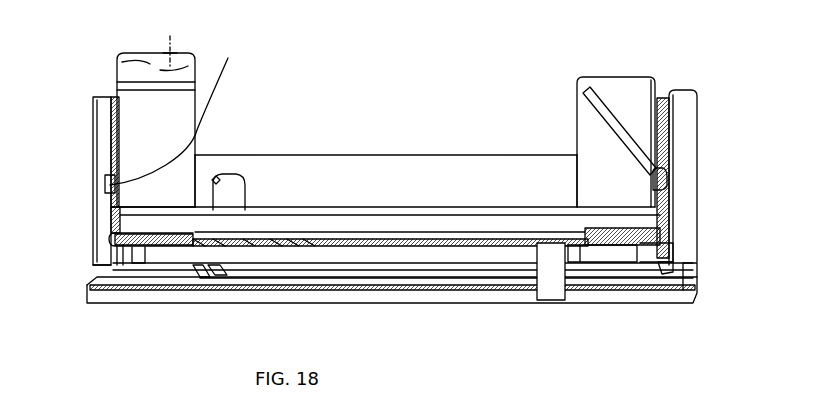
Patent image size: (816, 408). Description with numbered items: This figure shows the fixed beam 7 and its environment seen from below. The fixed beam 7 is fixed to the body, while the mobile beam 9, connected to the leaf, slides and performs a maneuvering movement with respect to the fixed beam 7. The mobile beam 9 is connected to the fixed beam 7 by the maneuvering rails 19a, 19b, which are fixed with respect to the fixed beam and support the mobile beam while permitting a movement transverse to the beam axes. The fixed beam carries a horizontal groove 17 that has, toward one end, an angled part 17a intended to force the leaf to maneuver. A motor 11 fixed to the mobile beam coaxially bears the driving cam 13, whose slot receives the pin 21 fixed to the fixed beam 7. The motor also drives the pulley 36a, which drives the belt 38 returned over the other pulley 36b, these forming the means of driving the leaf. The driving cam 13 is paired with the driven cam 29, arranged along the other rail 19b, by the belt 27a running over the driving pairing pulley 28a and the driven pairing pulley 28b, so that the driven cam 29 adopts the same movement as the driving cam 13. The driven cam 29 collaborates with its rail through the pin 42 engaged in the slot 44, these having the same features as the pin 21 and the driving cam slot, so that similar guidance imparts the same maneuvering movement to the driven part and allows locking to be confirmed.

The fixed beam 7 is at (383, 172).
The mobile beam 9 is at (512, 293).
The motor 11 is at (175, 30).
The driving cam 13 is at (147, 143).
The groove 17 is at (303, 237).
The angled part of the groove 17a is at (246, 210).
The maneuvering rail 19a is at (100, 130).
The maneuvering rail 19b is at (682, 123).
The pin 21 is at (181, 105).
The belt 27a is at (488, 220).
The driving pairing pulley 28a is at (110, 225).
The driven pairing pulley 28b is at (628, 288).
The driven cam 29 is at (642, 88).
The pulley 36a is at (160, 247).
The pulley 36b is at (617, 217).
The belt 38 is at (370, 250).
The pin 42 is at (660, 180).
The slot 44 is at (638, 133).